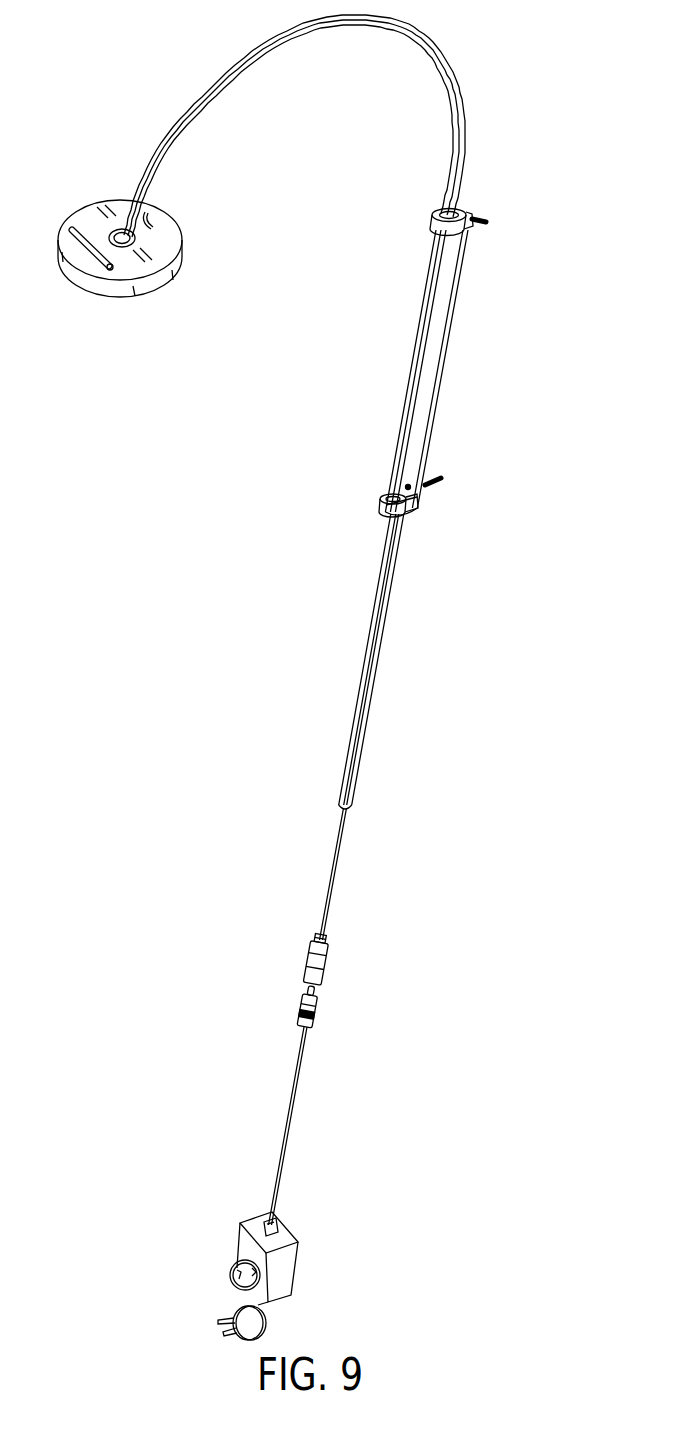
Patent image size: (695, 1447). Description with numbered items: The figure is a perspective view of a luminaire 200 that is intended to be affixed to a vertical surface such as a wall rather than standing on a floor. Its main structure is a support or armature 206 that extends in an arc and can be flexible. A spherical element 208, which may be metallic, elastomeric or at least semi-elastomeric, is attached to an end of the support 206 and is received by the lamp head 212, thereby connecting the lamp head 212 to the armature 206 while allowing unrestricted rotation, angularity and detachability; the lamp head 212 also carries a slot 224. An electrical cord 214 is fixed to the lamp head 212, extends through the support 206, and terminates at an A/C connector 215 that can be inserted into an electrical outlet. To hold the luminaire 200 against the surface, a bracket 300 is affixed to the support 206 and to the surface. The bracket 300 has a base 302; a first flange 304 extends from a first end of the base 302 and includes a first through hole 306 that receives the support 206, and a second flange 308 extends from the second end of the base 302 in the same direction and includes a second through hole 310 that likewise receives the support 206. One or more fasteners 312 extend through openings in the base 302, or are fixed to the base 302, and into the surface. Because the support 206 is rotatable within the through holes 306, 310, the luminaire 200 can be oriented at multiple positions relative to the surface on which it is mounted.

The luminaire 200 is at (545, 100).
The support or armature 206 is at (227, 87).
The spherical element 208 is at (113, 233).
The lamp head 212 is at (147, 288).
The electrical cord 214 is at (155, 219).
The slot 224 is at (88, 257).
The bracket 300 is at (475, 340).
The base 302 is at (423, 412).
The first flange 304 is at (437, 227).
The first through hole 306 is at (410, 192).
The second flange 308 is at (390, 510).
The second through hole 310 is at (362, 480).
The fasteners 312 is at (473, 220).
The A/C connector 215 is at (287, 1277).